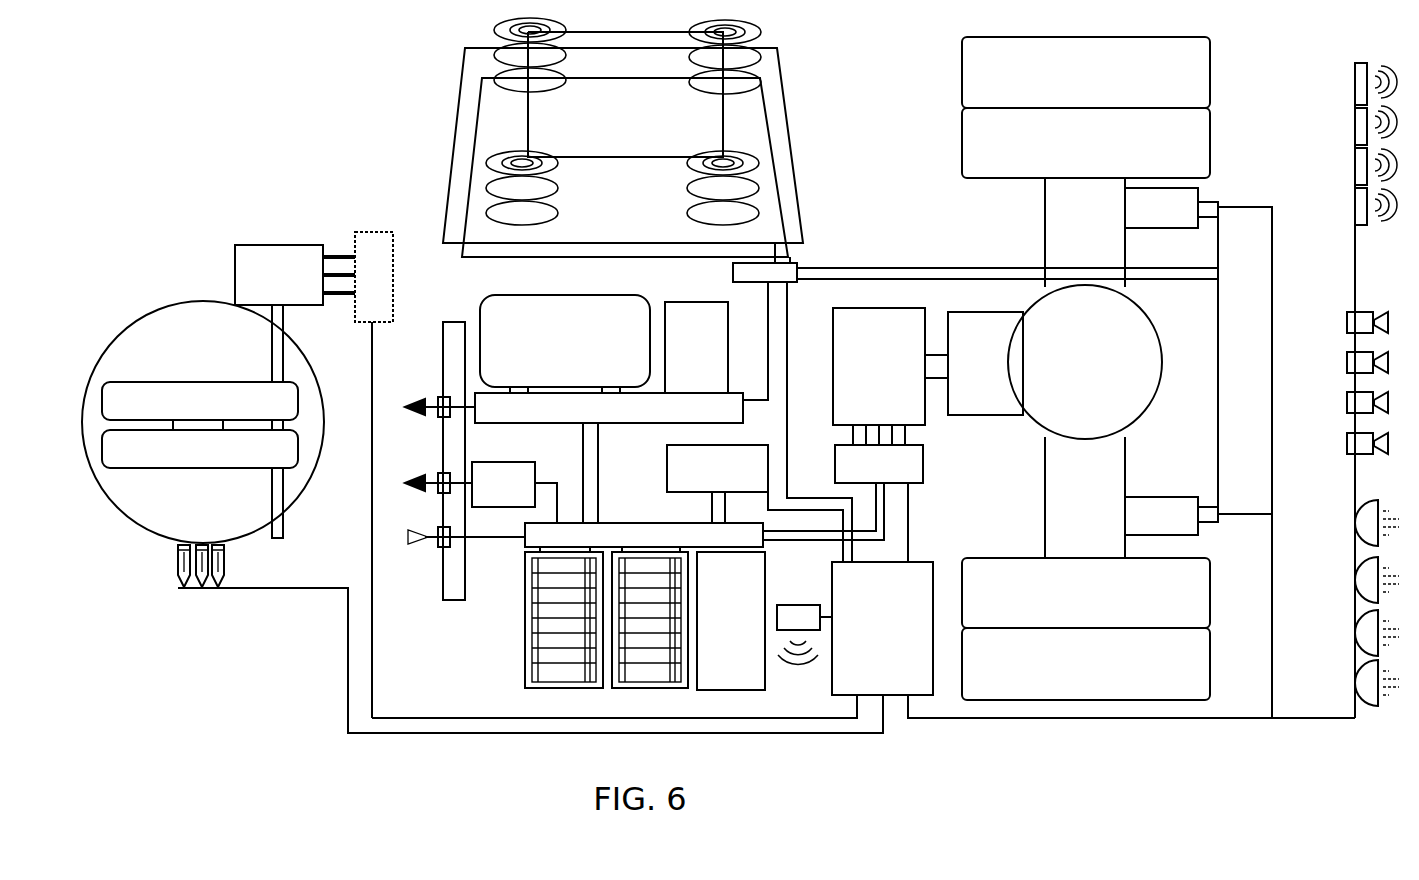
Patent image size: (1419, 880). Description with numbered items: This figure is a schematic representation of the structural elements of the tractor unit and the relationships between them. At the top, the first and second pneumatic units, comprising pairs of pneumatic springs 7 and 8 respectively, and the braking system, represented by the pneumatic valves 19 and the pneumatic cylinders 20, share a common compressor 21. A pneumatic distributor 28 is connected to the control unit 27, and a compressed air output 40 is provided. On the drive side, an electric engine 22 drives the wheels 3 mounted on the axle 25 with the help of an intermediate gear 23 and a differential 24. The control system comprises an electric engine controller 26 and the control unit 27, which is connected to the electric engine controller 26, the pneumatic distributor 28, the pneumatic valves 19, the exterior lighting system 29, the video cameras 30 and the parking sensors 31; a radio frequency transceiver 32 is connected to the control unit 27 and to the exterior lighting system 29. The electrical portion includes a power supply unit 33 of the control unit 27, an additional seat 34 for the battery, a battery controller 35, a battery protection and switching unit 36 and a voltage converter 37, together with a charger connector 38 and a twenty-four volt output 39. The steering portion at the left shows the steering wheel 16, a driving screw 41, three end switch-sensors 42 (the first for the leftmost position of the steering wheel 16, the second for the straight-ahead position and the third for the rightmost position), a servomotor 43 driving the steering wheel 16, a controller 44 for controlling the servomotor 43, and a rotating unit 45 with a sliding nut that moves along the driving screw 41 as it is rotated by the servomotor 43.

The wheels 3 is at (1086, 368).
The pneumatic springs 7 is at (538, 121).
The pneumatic springs 8 is at (704, 122).
The steering wheel 16 is at (200, 456).
The pneumatic valves 19 is at (1207, 210).
The pneumatic cylinders 20 is at (1161, 361).
The compressor 21 is at (609, 409).
The electric engine 22 is at (879, 376).
The intermediate gear 23 is at (974, 363).
The differential 24 is at (1085, 362).
The axle 25 is at (1085, 368).
The electric engine controller 26 is at (843, 503).
The control unit 27 is at (766, 647).
The pneumatic distributor 28 is at (783, 270).
The exterior lighting system 29 is at (1343, 603).
The video cameras 30 is at (1335, 383).
The parking sensors 31 is at (1340, 144).
The radio frequency transceiver 32 is at (790, 622).
The power supply unit 33 is at (755, 503).
The additional seat for the battery 34 is at (731, 621).
The battery controller 35 is at (579, 624).
The battery protection and switching unit 36 is at (605, 537).
The voltage converter 37 is at (514, 492).
The charger connector 38 is at (462, 558).
The 24 V output 39 is at (435, 501).
The compressed air output 40 is at (438, 426).
The driving screw 41 is at (277, 530).
The end switch-sensors 42 is at (201, 600).
The servomotor 43 is at (295, 275).
The controller 44 is at (372, 255).
The rotating unit 45 is at (203, 422).